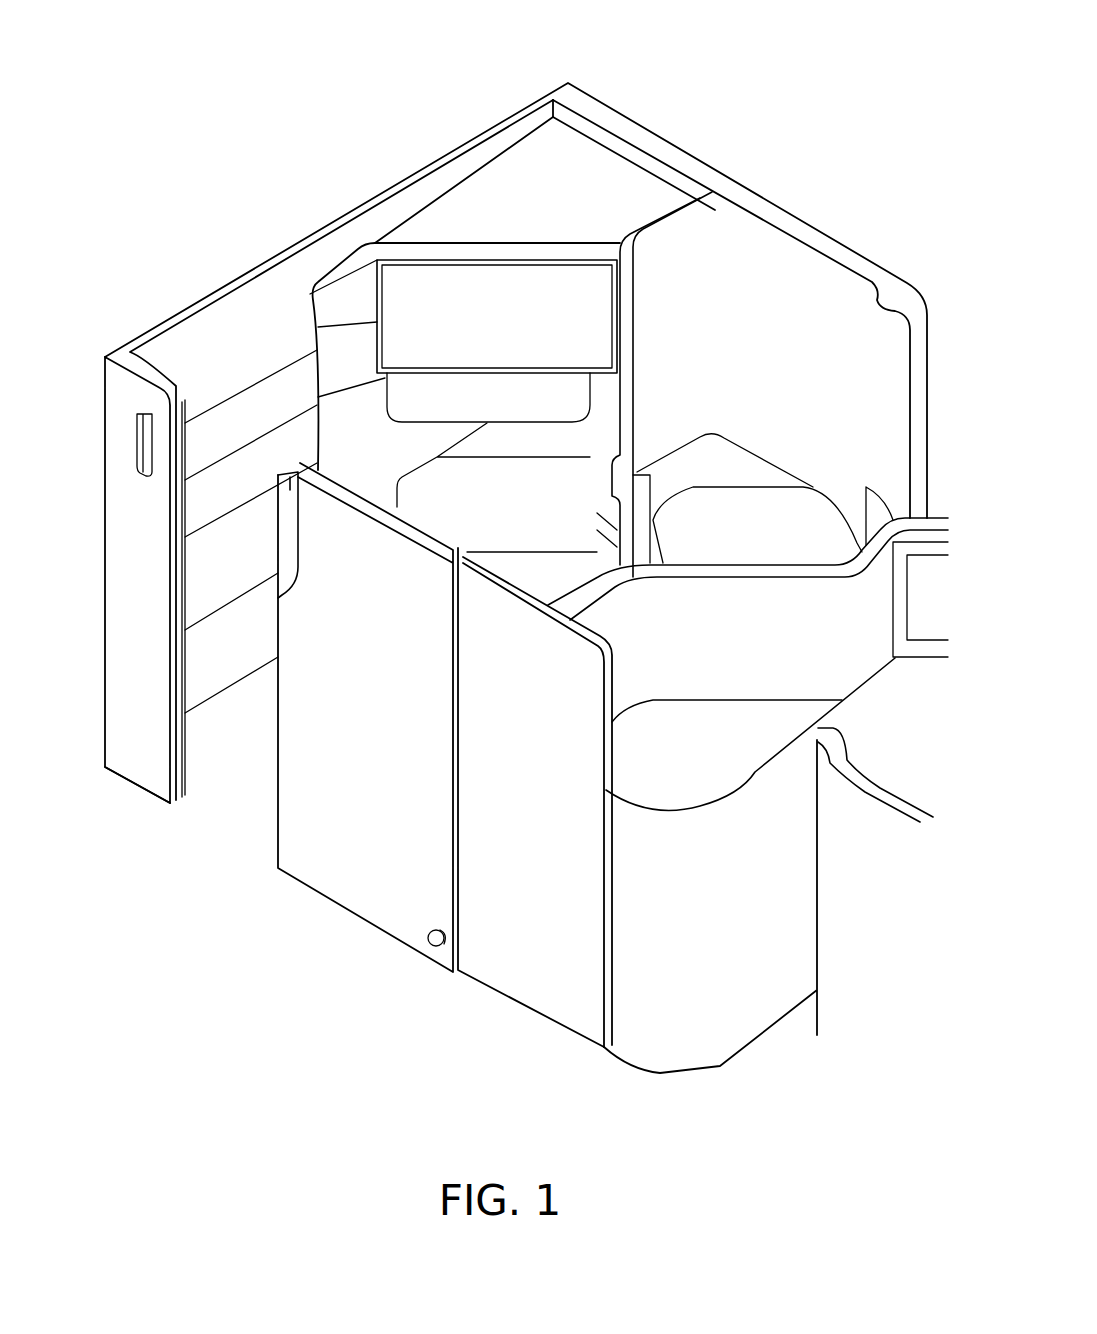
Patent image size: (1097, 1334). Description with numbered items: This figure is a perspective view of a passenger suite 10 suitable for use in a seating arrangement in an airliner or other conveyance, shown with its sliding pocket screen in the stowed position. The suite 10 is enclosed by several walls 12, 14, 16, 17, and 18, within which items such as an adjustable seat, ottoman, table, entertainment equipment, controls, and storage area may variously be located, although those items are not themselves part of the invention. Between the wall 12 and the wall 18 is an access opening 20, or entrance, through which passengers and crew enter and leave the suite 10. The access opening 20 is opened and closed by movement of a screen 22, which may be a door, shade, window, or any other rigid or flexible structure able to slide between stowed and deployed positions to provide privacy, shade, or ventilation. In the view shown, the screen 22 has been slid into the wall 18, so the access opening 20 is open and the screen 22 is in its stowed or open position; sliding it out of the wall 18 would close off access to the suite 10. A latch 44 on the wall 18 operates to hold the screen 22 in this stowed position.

The passenger suite 10 is at (742, 108).
The wall 12 is at (130, 545).
The wall 14 is at (258, 268).
The wall 16 is at (778, 210).
The wall 17 is at (690, 1030).
The wall 18 is at (352, 877).
The access opening 20 is at (258, 876).
The screen 22 is at (290, 477).
The latch 44 is at (433, 948).